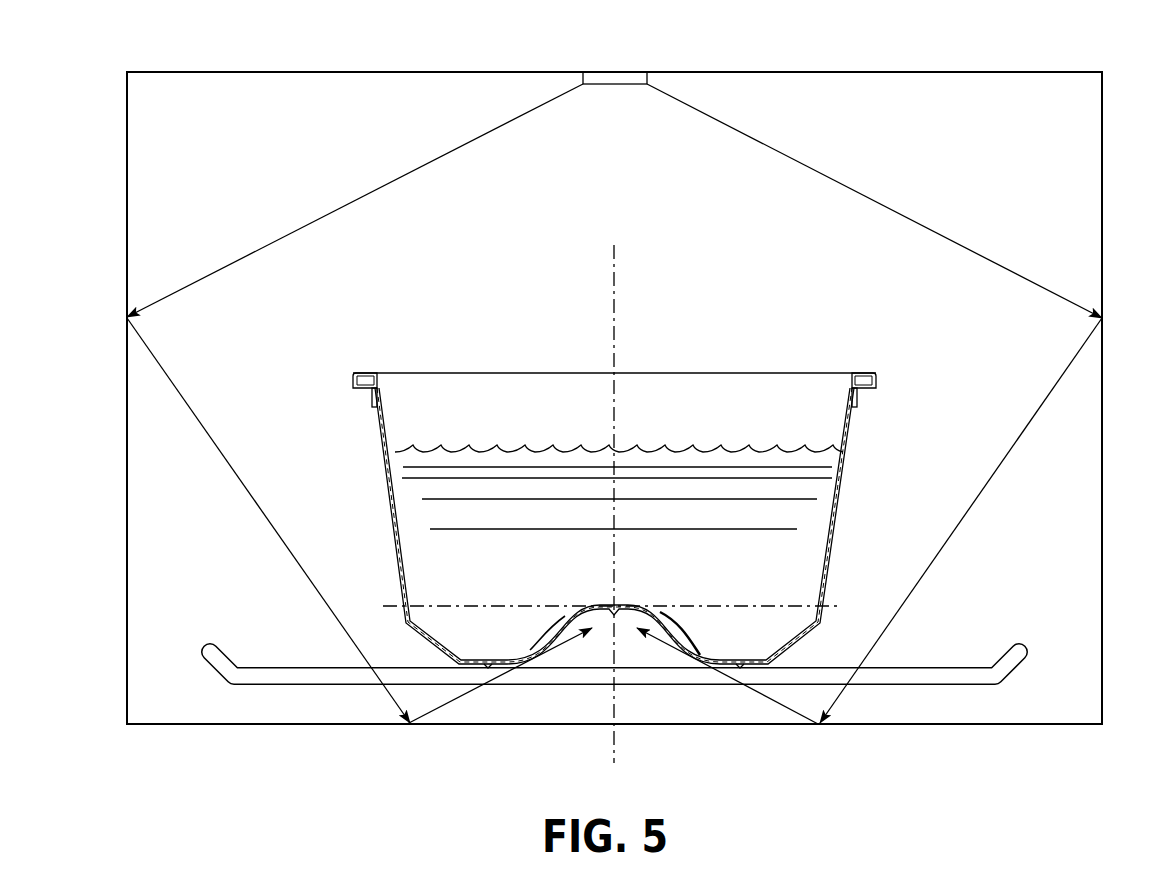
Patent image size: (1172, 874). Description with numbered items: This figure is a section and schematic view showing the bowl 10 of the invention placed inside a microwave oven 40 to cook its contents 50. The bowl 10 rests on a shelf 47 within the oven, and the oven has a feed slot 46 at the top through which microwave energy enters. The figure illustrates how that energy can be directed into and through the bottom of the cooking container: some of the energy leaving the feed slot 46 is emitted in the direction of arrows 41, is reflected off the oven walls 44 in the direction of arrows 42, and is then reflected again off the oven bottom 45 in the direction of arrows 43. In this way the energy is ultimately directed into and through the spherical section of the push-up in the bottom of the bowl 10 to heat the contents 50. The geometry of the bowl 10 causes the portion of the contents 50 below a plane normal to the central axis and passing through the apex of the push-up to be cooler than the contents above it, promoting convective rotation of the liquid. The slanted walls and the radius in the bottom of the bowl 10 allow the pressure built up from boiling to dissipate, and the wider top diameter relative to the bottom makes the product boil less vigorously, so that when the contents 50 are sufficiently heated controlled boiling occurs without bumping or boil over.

The bowl 10 is at (780, 378).
The microwave oven 40 is at (1018, 149).
The arrows 41 is at (280, 240).
The arrows 42 is at (240, 487).
The arrows 43 is at (458, 698).
The walls 44 is at (127, 439).
The bottom 45 is at (292, 725).
The feed slot 46 is at (627, 66).
The shelf 47 is at (930, 676).
The contents 50 is at (747, 582).